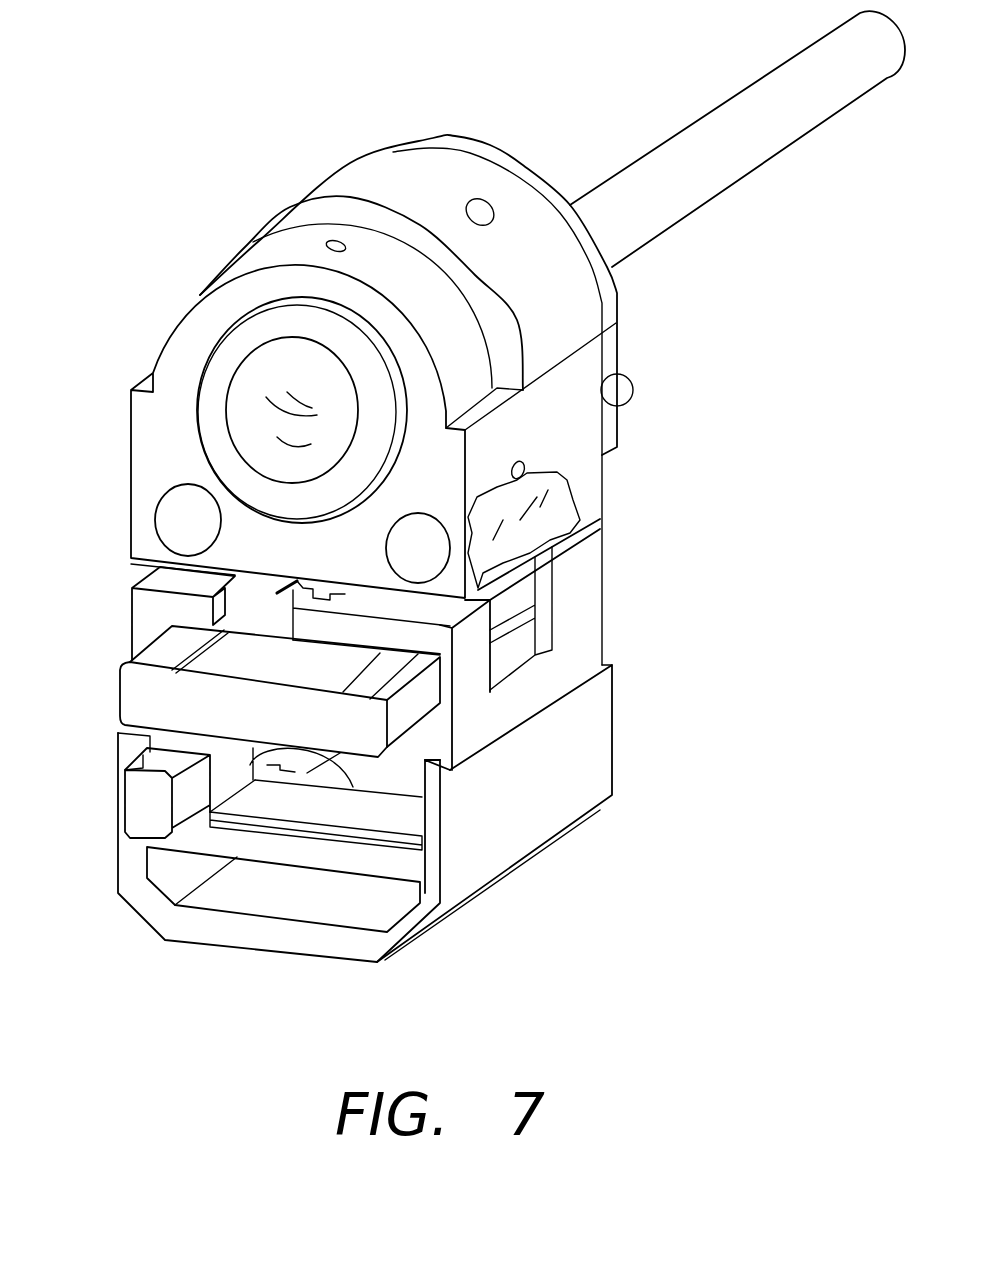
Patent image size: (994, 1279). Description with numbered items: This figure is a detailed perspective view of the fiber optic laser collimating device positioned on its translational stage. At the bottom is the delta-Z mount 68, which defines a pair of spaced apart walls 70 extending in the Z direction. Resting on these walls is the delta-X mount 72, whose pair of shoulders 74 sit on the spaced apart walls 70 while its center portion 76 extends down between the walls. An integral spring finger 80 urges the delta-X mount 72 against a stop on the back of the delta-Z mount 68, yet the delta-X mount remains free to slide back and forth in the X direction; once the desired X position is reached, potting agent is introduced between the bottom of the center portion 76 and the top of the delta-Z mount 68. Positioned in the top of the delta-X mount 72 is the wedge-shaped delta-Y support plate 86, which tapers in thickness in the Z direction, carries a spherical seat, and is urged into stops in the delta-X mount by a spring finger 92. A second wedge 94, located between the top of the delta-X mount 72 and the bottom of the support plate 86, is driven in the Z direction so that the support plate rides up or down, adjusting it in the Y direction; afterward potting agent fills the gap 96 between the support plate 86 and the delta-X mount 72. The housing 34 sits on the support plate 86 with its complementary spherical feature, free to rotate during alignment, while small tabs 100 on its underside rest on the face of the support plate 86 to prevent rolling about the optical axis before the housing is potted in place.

The housing 34 is at (573, 392).
The delta-Z mount 68 is at (613, 727).
The spaced apart walls 70 is at (118, 758).
The delta-X mount 72 is at (600, 635).
The shoulders 74 is at (432, 740).
The center portion 76 is at (230, 793).
The integral spring finger 80 is at (373, 810).
The delta-Y support plate 86 is at (268, 612).
The spring finger 92 is at (343, 630).
The second wedge 94 is at (118, 705).
The gap 96 is at (250, 637).
The small tabs 100 is at (580, 520).